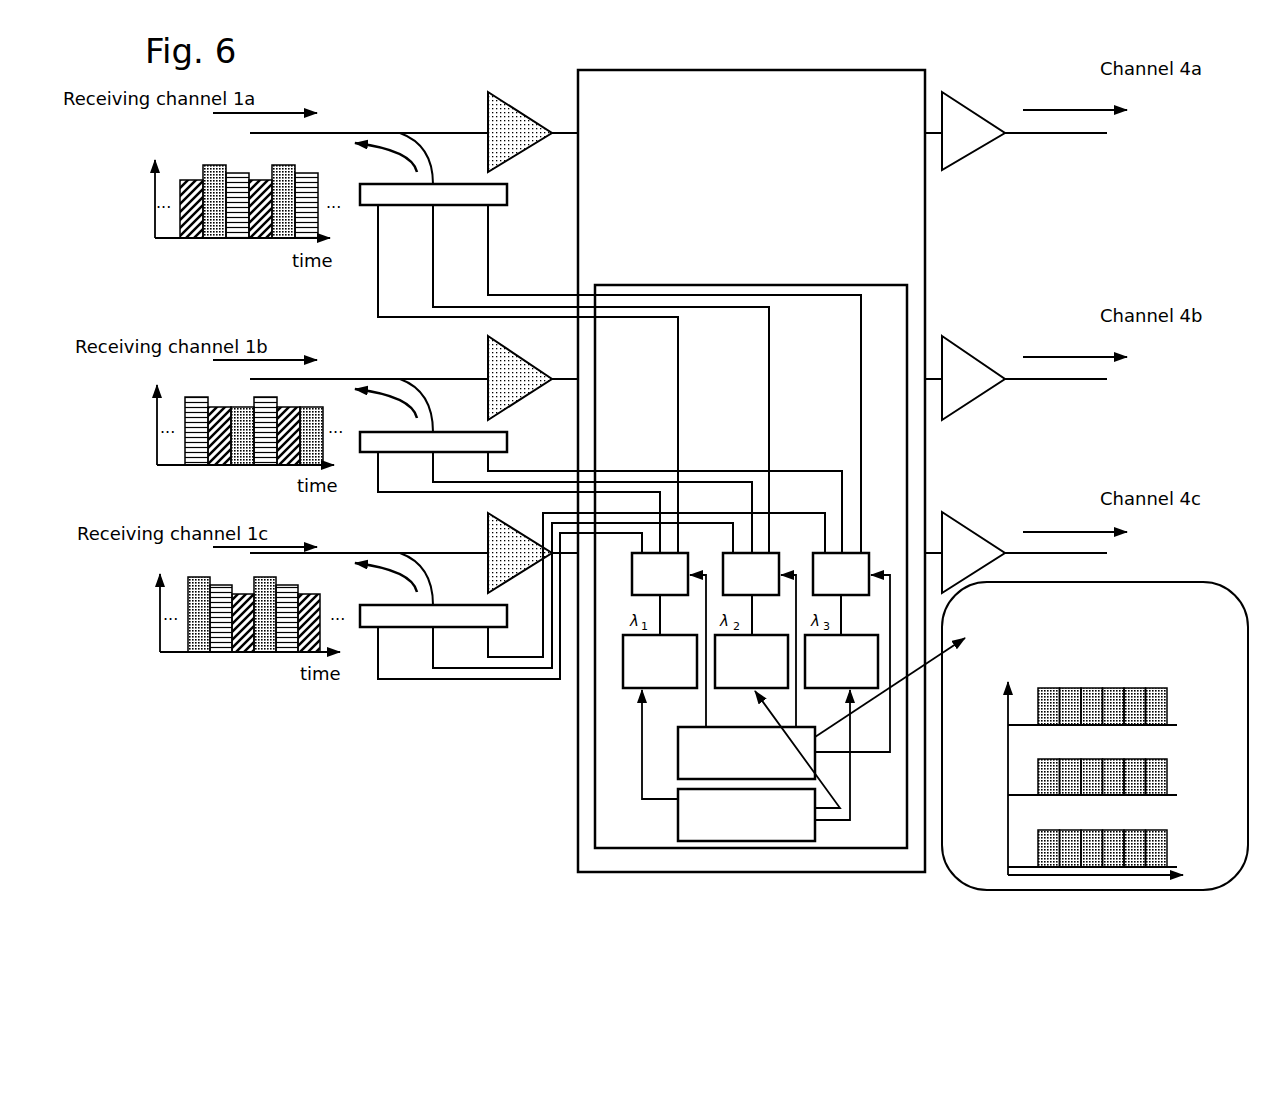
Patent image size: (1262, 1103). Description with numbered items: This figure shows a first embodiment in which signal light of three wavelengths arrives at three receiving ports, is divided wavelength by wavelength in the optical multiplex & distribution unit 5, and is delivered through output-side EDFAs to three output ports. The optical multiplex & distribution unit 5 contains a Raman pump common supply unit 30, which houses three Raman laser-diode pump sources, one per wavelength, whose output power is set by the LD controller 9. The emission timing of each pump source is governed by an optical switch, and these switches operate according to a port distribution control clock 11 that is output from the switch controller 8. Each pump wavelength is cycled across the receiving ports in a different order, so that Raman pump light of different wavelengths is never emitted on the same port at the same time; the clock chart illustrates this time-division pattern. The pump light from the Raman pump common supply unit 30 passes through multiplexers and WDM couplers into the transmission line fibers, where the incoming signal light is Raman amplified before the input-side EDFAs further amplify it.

The optical multiplex & distribution unit 5 is at (751, 448).
The switch controller 8 is at (809, 677).
The LD controller 9 is at (746, 765).
The port distribution control clock 11 is at (1183, 595).
The Raman pump common supply unit 30 is at (751, 566).